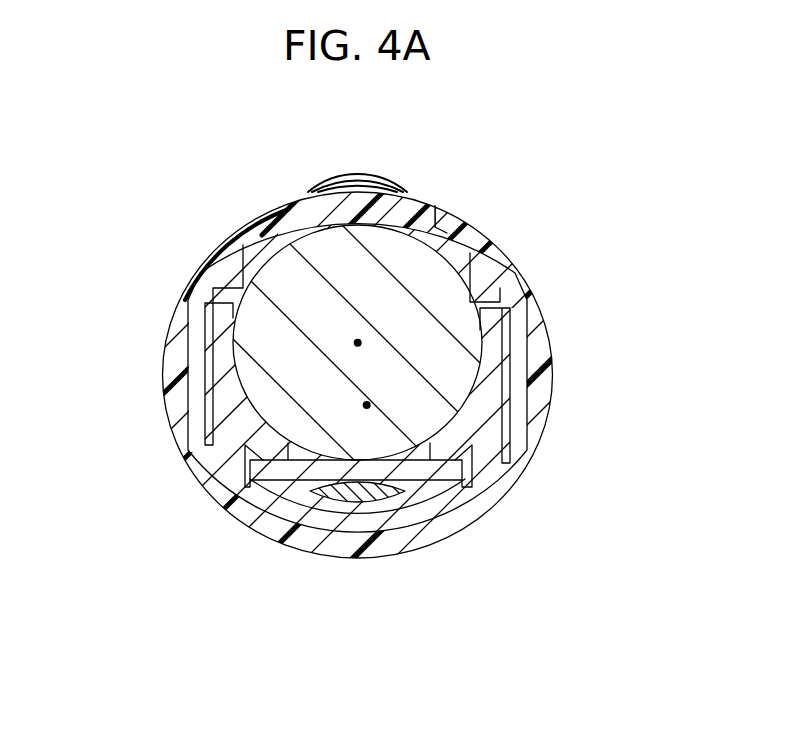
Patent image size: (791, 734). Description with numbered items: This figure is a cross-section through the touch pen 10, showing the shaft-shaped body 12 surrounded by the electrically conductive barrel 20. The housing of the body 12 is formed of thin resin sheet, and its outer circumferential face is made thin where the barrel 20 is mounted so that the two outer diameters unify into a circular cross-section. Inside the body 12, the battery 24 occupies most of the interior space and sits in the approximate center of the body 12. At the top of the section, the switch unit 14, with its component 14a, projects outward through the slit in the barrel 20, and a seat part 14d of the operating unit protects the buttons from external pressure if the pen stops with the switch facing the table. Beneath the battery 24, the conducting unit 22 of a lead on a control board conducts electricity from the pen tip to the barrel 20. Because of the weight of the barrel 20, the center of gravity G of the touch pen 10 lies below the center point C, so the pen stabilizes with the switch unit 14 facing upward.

The touch pen 10 is at (168, 272).
The body 12 is at (303, 223).
The switch unit 14 is at (360, 175).
The switch unit component 14a is at (294, 240).
The seat part 14d is at (393, 192).
The barrel 20 is at (542, 441).
The conducting unit 22 is at (350, 470).
The battery 24 is at (437, 302).